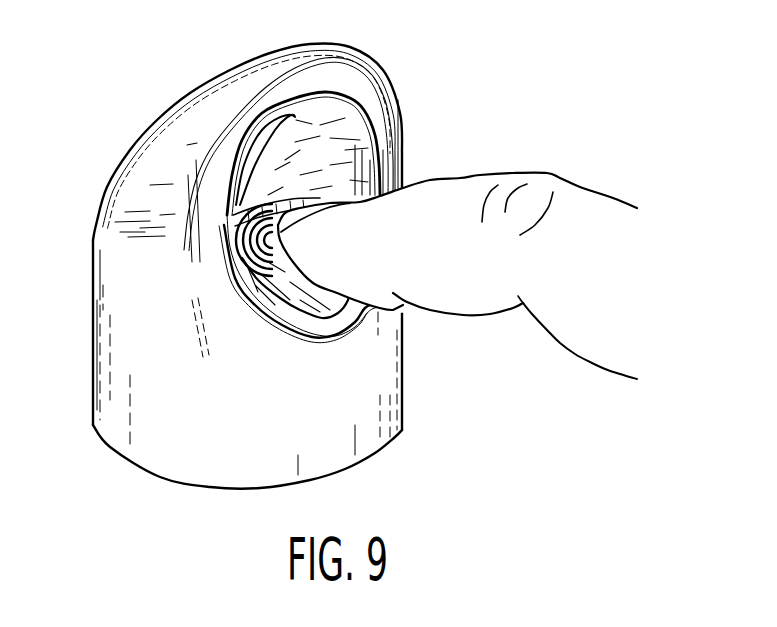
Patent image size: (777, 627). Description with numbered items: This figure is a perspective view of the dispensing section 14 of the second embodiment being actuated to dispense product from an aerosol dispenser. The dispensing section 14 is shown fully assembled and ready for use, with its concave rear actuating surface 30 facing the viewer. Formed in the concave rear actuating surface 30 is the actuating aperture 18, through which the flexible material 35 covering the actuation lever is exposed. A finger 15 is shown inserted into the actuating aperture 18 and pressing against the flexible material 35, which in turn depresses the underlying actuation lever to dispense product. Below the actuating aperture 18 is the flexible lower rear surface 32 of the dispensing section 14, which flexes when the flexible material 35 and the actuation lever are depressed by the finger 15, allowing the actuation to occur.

The dispensing section 14 is at (363, 54).
The concave rear actuating surface 30 is at (247, 143).
The actuating aperture 18 is at (345, 143).
The flexible lower rear surface 32 is at (380, 330).
The flexible material 35 is at (262, 233).
The finger 15 is at (602, 220).